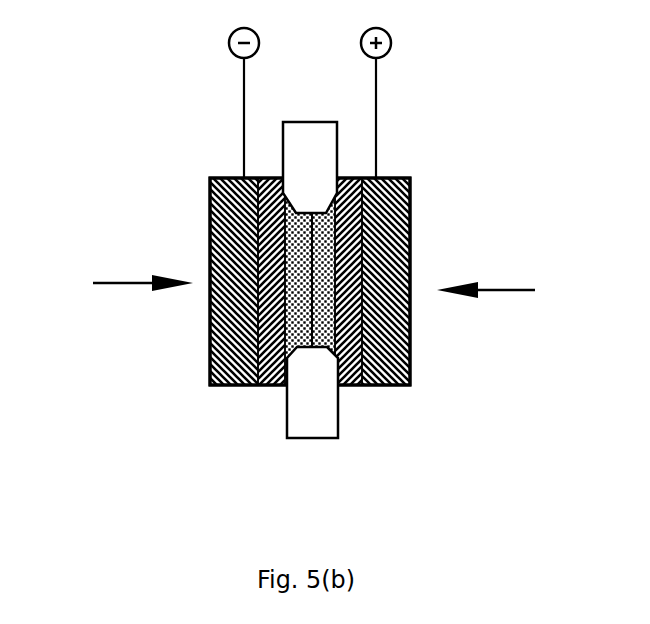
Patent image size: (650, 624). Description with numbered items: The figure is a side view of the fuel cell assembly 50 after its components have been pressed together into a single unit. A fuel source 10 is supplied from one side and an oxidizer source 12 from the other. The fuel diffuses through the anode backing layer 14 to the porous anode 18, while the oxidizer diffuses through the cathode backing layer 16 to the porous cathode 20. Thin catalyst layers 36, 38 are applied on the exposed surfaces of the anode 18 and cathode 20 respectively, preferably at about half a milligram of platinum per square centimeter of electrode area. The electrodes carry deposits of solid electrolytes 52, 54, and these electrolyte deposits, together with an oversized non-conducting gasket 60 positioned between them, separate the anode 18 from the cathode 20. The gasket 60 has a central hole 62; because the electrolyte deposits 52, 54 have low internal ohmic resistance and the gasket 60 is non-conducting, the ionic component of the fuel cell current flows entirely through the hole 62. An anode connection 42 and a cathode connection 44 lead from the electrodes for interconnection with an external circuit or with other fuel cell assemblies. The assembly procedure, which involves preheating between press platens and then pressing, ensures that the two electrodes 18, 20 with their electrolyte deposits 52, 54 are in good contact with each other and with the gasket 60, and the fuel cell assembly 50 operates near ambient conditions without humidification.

The fuel source 10 is at (139, 281).
The oxidizer source 12 is at (487, 276).
The anode backing layer 14 is at (213, 338).
The cathode backing layer 16 is at (402, 338).
The anode 18 is at (272, 385).
The cathode 20 is at (352, 385).
The thin catalyst layer 36 is at (292, 331).
The thin catalyst layer 38 is at (334, 322).
The anode connection 42 is at (242, 93).
The cathode connection 44 is at (382, 92).
The fuel cell assembly 50 is at (105, 74).
The solid electrolyte deposit 52 is at (292, 238).
The solid electrolyte deposit 54 is at (330, 238).
The non-conducting gasket 60 is at (317, 438).
The hole 62 is at (338, 313).